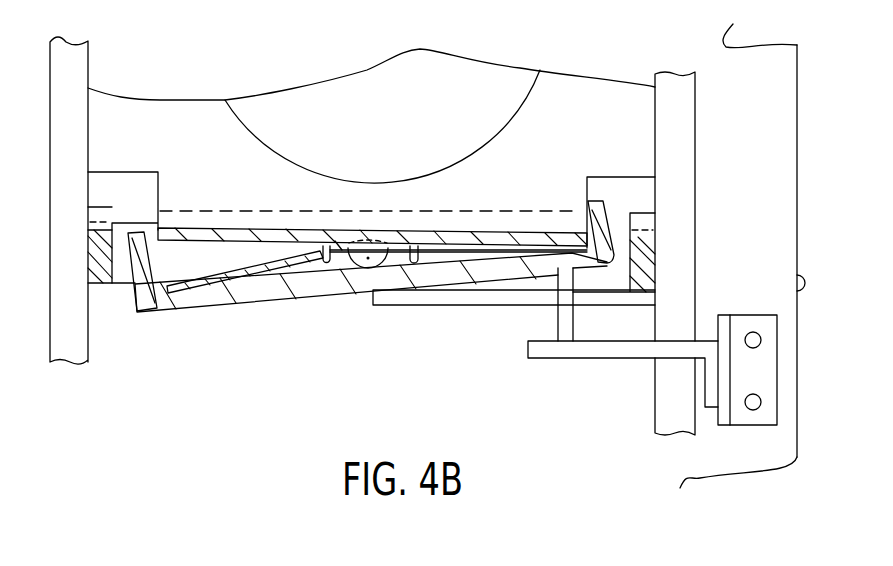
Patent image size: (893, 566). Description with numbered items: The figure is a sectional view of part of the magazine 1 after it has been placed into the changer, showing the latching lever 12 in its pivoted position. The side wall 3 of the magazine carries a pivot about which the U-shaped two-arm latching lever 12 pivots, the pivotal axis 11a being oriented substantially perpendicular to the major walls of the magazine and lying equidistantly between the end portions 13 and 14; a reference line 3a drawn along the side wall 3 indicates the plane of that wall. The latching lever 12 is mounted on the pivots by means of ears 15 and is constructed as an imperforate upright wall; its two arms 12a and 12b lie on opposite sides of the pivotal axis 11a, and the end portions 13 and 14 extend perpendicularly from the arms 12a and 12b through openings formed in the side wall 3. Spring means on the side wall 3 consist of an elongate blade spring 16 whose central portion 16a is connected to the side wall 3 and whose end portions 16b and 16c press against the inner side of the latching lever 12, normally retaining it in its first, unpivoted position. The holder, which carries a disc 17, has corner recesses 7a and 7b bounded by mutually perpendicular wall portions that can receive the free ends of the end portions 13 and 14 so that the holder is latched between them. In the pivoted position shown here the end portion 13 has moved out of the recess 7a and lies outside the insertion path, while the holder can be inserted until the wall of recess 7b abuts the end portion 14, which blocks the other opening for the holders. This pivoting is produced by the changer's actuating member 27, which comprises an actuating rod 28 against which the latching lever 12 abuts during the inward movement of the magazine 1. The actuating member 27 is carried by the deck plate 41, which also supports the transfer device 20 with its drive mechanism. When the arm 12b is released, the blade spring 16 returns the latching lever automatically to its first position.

The magazine 1 is at (167, 100).
The disc 17 is at (497, 78).
The transfer device 20 is at (703, 97).
The recess 7a is at (120, 180).
The recess 7b is at (648, 190).
The side wall 3 is at (408, 231).
The reference plane of plate 3a is at (447, 214).
The blade spring 16 is at (377, 270).
The central portion 16a is at (336, 240).
The end portion 16b is at (230, 270).
The end portion 16c is at (505, 233).
The end portion 13 is at (130, 267).
The end portion 14 is at (618, 242).
The latching lever 12 is at (395, 305).
The arm 12a is at (182, 312).
The arm 12b is at (545, 273).
The ears 15 is at (353, 268).
The pivotal axis 11a is at (368, 262).
The actuating rod 28 is at (565, 345).
The actuating member 27 is at (630, 359).
The deck plate 41 is at (797, 281).